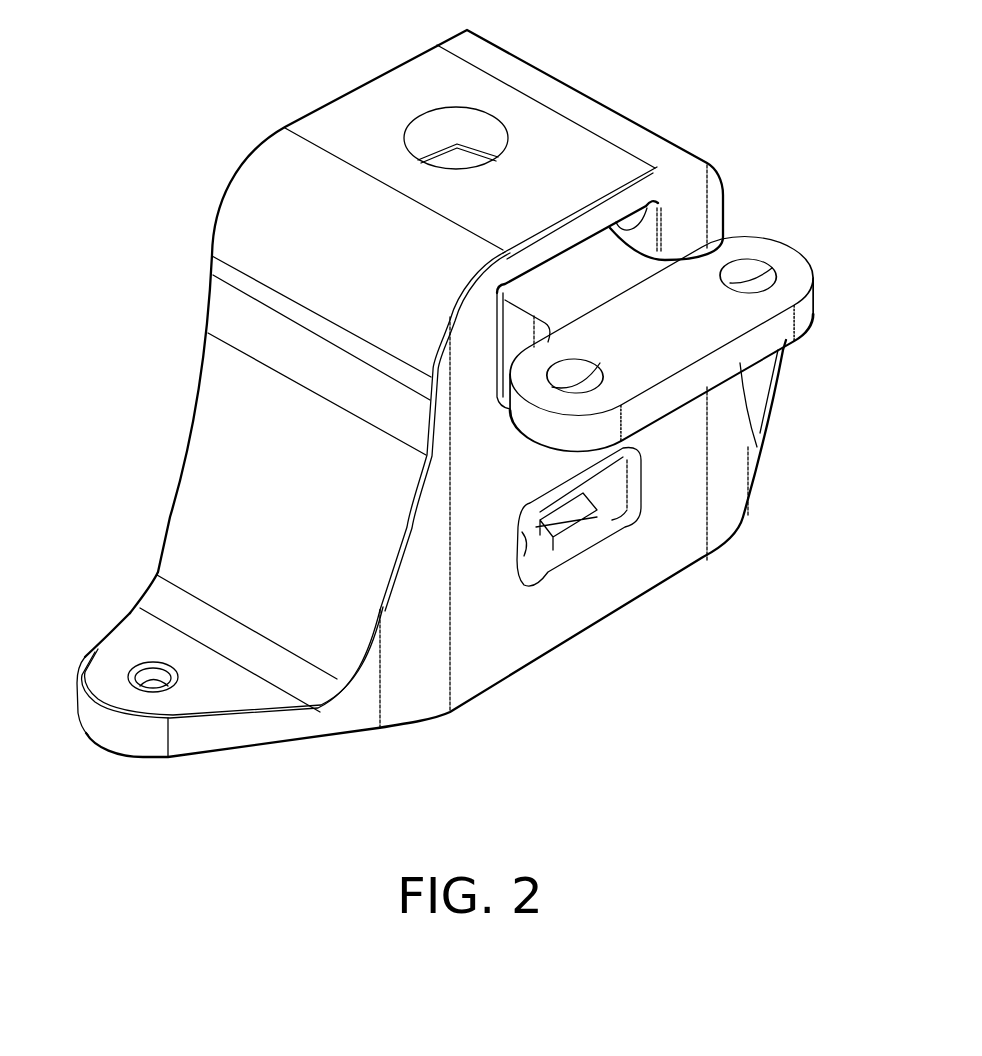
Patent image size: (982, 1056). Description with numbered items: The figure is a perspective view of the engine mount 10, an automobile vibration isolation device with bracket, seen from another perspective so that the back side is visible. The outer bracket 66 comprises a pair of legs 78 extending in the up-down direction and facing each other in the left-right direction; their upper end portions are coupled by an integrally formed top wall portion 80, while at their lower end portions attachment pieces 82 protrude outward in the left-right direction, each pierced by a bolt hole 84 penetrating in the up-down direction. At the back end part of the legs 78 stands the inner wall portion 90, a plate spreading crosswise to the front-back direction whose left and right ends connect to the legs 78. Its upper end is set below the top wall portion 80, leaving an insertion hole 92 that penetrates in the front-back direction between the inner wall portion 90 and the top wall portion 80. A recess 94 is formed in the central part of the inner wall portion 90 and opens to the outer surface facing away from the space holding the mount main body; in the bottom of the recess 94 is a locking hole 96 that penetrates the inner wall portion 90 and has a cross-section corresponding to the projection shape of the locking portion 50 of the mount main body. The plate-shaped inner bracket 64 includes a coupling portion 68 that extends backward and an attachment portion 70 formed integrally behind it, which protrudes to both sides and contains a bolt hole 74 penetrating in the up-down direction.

The engine mount 10 is at (765, 128).
The locking portion 50 is at (556, 501).
The inner bracket 64 is at (796, 236).
The outer bracket 66 is at (227, 184).
The coupling portion 68 is at (577, 272).
The attachment portion 70 is at (807, 313).
The bolt hole 74 is at (597, 380).
The legs 78 is at (213, 444).
The top wall portion 80 is at (413, 77).
The attachment piece 82 is at (130, 645).
The bolt hole 84 is at (151, 683).
The inner wall portion 90 is at (672, 510).
The insertion hole 92 is at (647, 212).
The recess 94 is at (530, 548).
The locking hole 96 is at (547, 530).